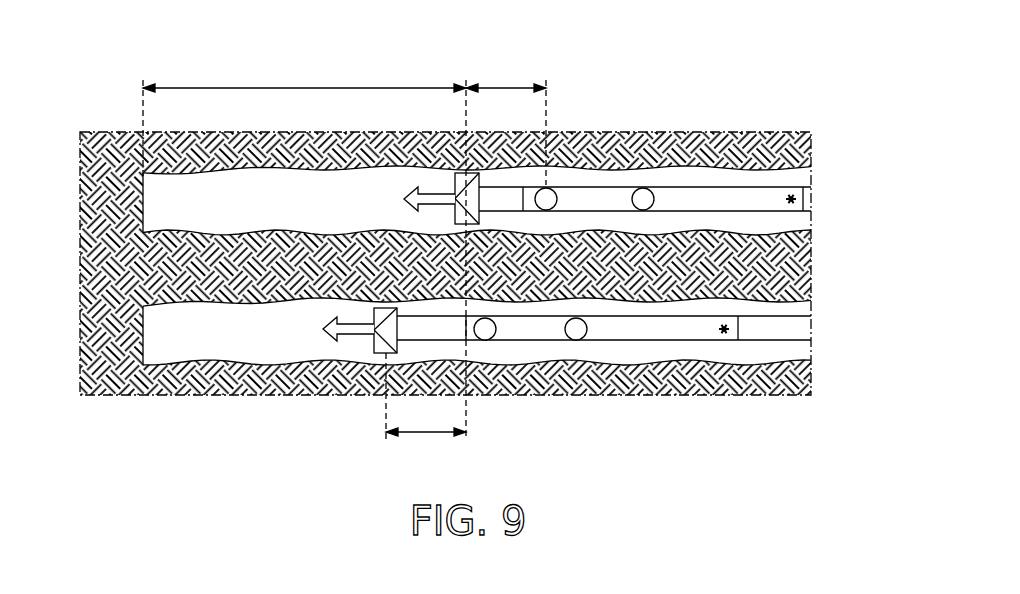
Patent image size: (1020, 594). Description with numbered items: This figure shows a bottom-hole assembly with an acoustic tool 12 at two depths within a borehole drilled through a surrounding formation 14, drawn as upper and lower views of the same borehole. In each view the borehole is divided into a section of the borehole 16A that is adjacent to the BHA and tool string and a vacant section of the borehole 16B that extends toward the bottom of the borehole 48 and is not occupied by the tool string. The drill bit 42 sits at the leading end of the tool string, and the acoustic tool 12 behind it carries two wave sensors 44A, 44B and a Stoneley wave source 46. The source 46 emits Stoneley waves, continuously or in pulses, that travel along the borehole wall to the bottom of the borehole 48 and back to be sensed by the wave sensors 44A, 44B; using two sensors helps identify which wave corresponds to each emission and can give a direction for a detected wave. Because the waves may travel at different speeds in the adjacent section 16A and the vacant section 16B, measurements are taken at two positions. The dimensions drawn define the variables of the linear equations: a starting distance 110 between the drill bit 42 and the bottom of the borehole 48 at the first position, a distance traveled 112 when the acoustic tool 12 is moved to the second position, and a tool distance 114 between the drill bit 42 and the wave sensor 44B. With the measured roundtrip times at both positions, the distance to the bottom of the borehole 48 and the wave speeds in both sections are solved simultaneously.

The acoustic tool 12 is at (773, 188).
The subterranean formation 14 is at (113, 150).
The section of the borehole adjacent to the BHA 16A is at (722, 176).
The vacant section of the borehole 16B is at (290, 188).
The drill bit 42 is at (456, 184).
The wave sensor 44A is at (646, 199).
The wave sensor 44B is at (548, 199).
The Stoneley wave source 46 is at (791, 205).
The bottom of the borehole 48 is at (143, 210).
The starting distance 110 is at (314, 88).
The distance traveled 112 is at (425, 432).
The tool distance 114 is at (508, 88).